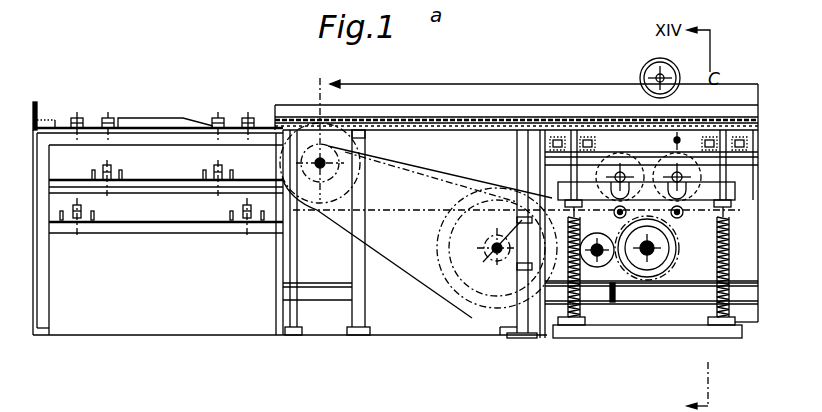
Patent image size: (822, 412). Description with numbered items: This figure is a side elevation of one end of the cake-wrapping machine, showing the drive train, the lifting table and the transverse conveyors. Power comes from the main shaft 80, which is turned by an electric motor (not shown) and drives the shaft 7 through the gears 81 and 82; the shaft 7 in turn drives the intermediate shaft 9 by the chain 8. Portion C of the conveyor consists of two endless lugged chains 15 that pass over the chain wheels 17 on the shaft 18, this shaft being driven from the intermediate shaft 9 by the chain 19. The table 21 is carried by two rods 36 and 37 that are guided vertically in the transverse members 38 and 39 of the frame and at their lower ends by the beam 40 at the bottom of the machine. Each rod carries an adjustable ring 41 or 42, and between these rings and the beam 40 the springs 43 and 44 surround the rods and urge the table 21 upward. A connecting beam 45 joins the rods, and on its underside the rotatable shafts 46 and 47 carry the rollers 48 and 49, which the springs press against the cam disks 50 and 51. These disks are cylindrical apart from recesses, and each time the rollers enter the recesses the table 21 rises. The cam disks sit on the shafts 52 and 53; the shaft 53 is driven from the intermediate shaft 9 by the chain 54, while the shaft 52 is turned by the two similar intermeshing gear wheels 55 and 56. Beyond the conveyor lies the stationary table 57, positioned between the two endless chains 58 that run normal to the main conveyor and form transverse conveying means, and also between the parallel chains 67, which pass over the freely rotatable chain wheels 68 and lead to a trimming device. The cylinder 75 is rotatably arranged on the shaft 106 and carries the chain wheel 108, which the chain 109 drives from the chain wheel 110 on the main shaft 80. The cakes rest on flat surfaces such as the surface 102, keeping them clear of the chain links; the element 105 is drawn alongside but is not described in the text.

The shaft 7 is at (642, 285).
The chain 8 is at (598, 300).
The intermediate shaft 9 is at (490, 251).
The endless chains 15 is at (400, 199).
The chain wheels 17 is at (313, 208).
The shaft 18 is at (323, 160).
The chain 19 is at (398, 253).
The table 21 is at (727, 130).
The rod 36 is at (755, 153).
The rod 37 is at (537, 165).
The transverse member 38 is at (753, 123).
The transverse member 39 is at (550, 123).
The beam 40 is at (677, 333).
The adjustable ring 41 is at (688, 268).
The adjustable ring 42 is at (495, 231).
The spring 43 is at (727, 288).
The spring 44 is at (600, 293).
The connecting beam 45 is at (737, 240).
The rotatable shaft 46 is at (690, 286).
The rotatable shaft 47 is at (394, 272).
The roller 48 is at (682, 230).
The roller 49 is at (533, 184).
The cam disk 50 is at (664, 144).
The cam disk 51 is at (647, 165).
The shaft 52 is at (690, 160).
The shaft 53 is at (640, 165).
The chain 54 is at (514, 273).
The gear wheel 55 is at (737, 184).
The gear wheel 56 is at (612, 153).
The stationary table 57 is at (152, 118).
The endless chains 58 is at (216, 170).
The chains 67 is at (77, 118).
The chain wheels 68 is at (109, 164).
The cylinder 75 is at (666, 66).
The main shaft 80 is at (515, 337).
The gear 81 is at (612, 330).
The gear 82 is at (663, 313).
The flat surface 102 is at (383, 117).
The table top 105 is at (421, 117).
The shaft 106 is at (672, 78).
The chain wheel 108 is at (648, 63).
The chain 109 is at (622, 135).
The chain wheel 110 is at (578, 322).